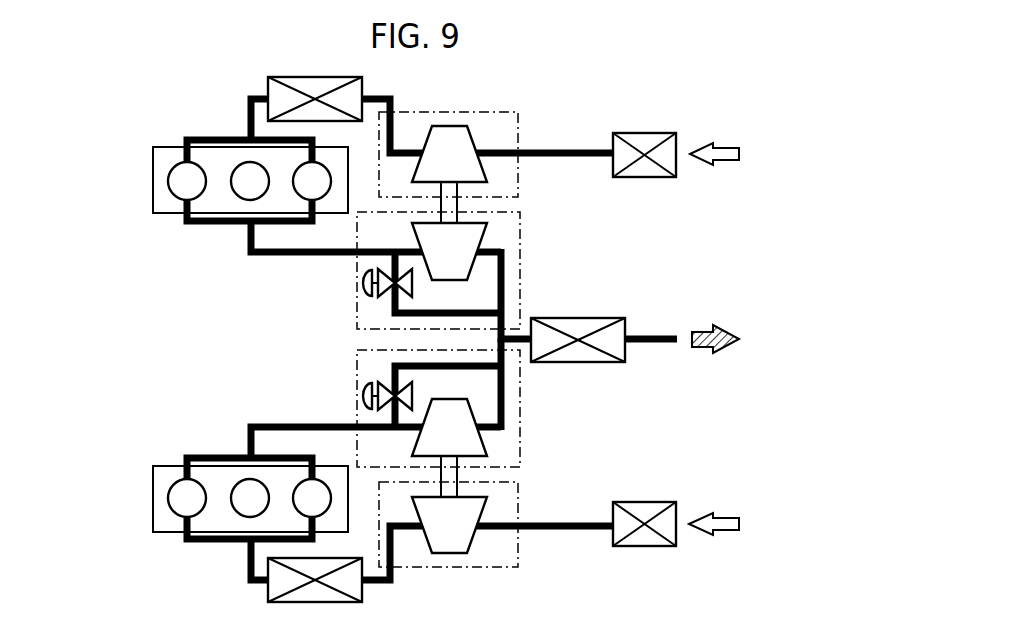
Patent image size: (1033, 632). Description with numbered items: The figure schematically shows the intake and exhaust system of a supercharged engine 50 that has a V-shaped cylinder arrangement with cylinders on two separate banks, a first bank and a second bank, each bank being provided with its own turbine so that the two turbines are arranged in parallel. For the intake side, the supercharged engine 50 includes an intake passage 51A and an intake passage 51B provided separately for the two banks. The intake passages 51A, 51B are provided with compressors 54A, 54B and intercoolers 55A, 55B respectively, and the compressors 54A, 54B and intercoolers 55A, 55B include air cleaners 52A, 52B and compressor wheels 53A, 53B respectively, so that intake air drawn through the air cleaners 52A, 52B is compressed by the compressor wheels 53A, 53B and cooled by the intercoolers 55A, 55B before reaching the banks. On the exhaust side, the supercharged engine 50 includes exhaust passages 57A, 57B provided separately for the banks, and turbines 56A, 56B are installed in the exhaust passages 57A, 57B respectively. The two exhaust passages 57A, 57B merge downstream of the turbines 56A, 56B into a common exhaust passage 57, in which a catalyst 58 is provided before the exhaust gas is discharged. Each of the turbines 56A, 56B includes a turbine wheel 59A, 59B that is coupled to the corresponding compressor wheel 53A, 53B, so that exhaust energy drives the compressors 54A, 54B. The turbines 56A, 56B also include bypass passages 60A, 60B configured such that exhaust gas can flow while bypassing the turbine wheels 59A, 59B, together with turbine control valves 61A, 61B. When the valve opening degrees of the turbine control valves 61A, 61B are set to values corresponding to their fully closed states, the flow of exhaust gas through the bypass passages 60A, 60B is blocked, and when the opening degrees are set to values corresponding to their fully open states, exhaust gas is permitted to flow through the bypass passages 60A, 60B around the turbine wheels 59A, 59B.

The supercharged engine 50 is at (116, 128).
The intake passage 51A is at (585, 157).
The intake passage 51B is at (585, 522).
The air cleaner 52A is at (647, 178).
The air cleaner 52B is at (650, 503).
The compressor wheel 53A is at (487, 167).
The compressor wheel 53B is at (487, 509).
The compressor 54A is at (518, 127).
The compressor 54B is at (518, 552).
The intercooler 55A is at (362, 89).
The intercooler 55B is at (362, 590).
The turbine 56A is at (357, 310).
The turbine 56B is at (357, 368).
The exhaust passage 57 is at (648, 343).
The exhaust passage 57A is at (289, 256).
The exhaust passage 57B is at (289, 423).
The catalyst 58 is at (580, 362).
The turbine wheel 59A is at (483, 237).
The turbine wheel 59B is at (483, 442).
The bypass passage 60A is at (418, 310).
The bypass passage 60B is at (418, 368).
The turbine control valve 61A is at (362, 281).
The turbine control valve 61B is at (362, 396).